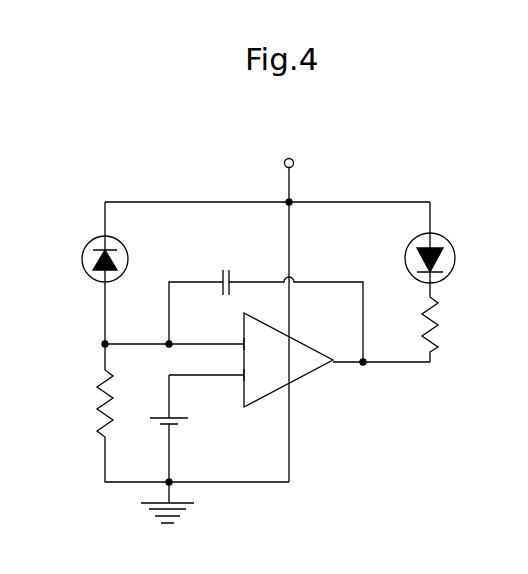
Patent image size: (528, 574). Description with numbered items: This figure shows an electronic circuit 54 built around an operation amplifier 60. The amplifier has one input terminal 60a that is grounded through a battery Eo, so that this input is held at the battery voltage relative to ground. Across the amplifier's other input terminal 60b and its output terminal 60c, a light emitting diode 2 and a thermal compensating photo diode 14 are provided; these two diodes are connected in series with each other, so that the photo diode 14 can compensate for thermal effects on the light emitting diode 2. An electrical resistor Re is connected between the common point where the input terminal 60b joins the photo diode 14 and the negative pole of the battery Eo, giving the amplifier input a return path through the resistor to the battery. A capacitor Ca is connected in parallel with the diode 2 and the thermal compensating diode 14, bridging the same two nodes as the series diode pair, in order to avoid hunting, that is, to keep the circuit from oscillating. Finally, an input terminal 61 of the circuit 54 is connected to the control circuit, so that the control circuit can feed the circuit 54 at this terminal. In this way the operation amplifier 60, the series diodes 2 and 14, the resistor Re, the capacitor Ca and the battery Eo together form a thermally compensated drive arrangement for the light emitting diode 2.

The circuit 54 is at (252, 198).
The input terminal 61 is at (294, 162).
The thermal compensating photo diode 14 is at (92, 249).
The light emitting diode 2 is at (455, 270).
The operation amplifier 60 is at (305, 362).
The input terminal 60a is at (250, 382).
The input terminal 60b is at (248, 347).
The output terminal 60c is at (345, 363).
The capacitor Ca is at (231, 271).
The battery Eo is at (178, 425).
The electrical resistor Re is at (93, 414).